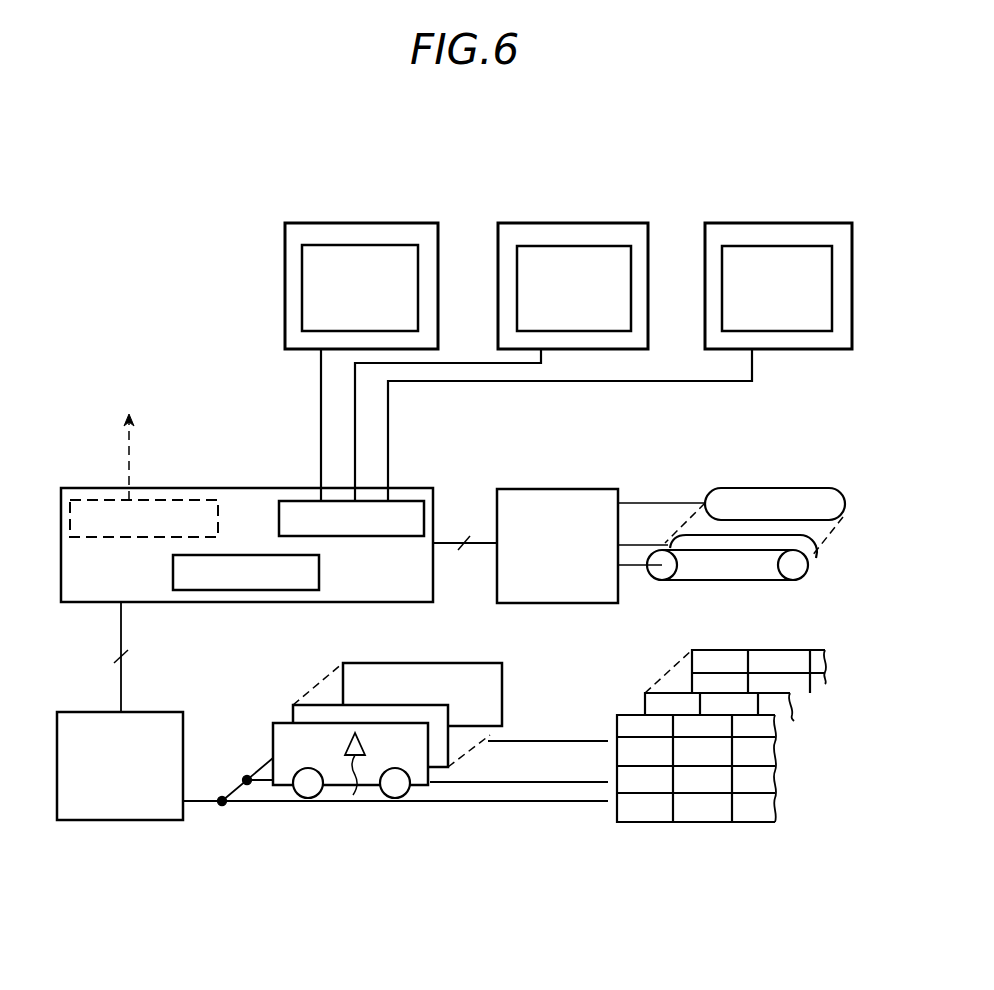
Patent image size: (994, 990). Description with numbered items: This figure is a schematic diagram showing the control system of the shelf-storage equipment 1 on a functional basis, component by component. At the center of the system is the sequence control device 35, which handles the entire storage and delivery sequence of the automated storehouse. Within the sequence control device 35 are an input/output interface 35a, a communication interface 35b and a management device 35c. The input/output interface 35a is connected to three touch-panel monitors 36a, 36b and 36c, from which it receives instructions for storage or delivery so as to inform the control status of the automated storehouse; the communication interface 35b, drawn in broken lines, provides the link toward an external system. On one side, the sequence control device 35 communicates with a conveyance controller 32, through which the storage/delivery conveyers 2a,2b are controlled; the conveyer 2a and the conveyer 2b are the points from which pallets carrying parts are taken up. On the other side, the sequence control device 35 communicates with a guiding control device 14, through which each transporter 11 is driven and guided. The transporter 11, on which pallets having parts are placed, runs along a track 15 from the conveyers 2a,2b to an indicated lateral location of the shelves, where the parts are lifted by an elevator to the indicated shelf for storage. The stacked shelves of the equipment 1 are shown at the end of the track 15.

The equipment 1 is at (693, 659).
The storage/delivery conveyers 2a,2b is at (746, 509).
The conveyer 2a is at (775, 504).
The conveyer 2b is at (768, 490).
The transporter 11 is at (275, 739).
The guiding control device 14 is at (133, 815).
The track 15 is at (513, 781).
The conveyance controller 32 is at (569, 489).
The sequence control device 35 is at (253, 488).
The input/output interface 35a is at (394, 536).
The communication interface 35b is at (141, 539).
The management device 35c is at (253, 582).
The touch-panel monitor 36a is at (364, 223).
The touch-panel monitor 36b is at (582, 223).
The touch-panel monitor 36c is at (785, 223).